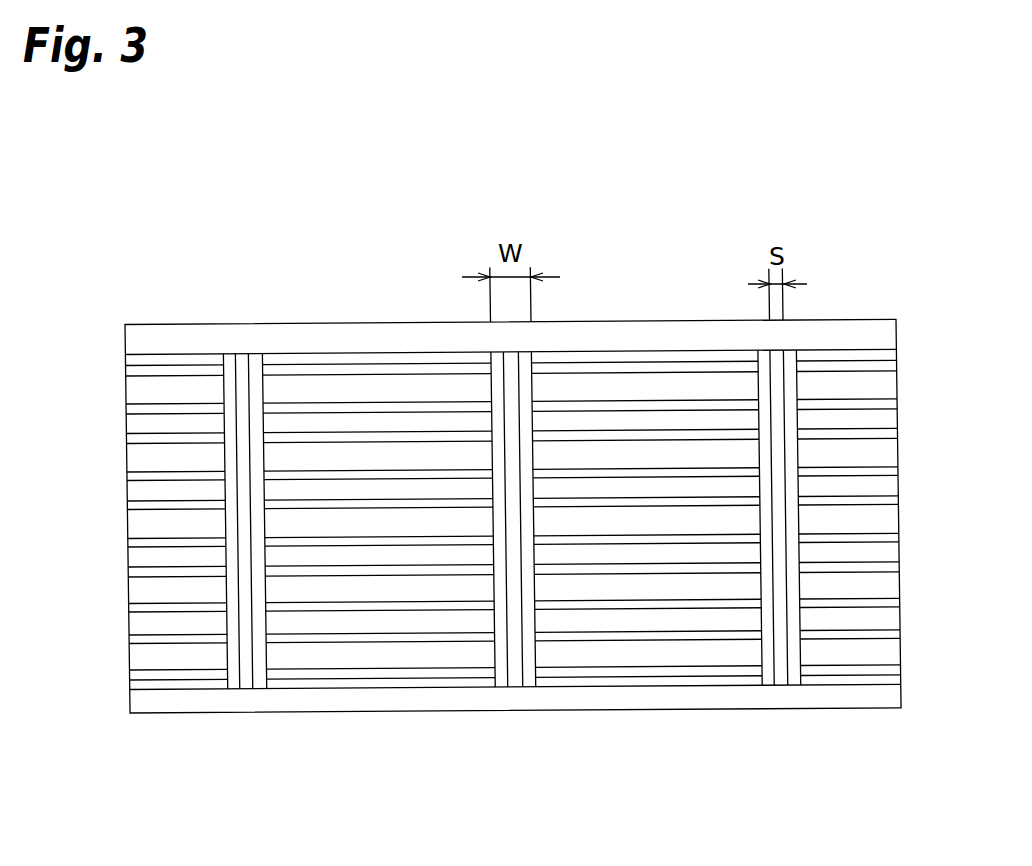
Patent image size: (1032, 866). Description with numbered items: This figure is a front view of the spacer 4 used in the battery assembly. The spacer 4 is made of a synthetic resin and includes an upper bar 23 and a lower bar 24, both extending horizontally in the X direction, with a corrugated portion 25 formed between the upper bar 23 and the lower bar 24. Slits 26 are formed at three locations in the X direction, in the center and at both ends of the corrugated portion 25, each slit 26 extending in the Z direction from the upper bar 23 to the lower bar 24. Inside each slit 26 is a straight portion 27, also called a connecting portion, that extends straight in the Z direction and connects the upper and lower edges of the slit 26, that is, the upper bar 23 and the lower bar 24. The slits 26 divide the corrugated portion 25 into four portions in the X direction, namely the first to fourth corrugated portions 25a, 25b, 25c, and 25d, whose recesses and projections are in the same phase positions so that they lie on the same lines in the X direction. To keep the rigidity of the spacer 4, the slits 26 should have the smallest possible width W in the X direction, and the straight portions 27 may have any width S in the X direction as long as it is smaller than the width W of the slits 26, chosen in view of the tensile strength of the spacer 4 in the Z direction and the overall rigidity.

The spacer 4 is at (262, 297).
The upper bar 23 is at (414, 337).
The lower bar 24 is at (408, 700).
The corrugated portion 25 is at (125, 407).
The first corrugated portion 25a is at (178, 385).
The second corrugated portion 25b is at (363, 382).
The third corrugated portion 25c is at (632, 378).
The fourth corrugated portion 25d is at (846, 379).
The slit 26 is at (233, 652).
The straight portion 27 is at (243, 662).